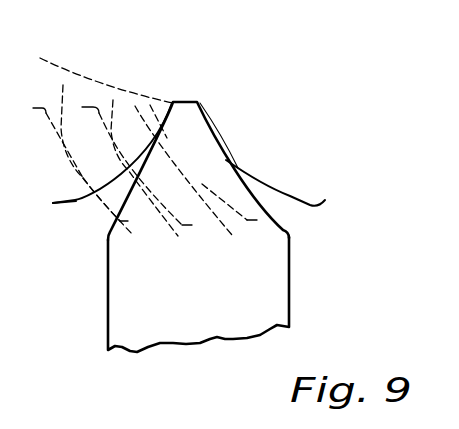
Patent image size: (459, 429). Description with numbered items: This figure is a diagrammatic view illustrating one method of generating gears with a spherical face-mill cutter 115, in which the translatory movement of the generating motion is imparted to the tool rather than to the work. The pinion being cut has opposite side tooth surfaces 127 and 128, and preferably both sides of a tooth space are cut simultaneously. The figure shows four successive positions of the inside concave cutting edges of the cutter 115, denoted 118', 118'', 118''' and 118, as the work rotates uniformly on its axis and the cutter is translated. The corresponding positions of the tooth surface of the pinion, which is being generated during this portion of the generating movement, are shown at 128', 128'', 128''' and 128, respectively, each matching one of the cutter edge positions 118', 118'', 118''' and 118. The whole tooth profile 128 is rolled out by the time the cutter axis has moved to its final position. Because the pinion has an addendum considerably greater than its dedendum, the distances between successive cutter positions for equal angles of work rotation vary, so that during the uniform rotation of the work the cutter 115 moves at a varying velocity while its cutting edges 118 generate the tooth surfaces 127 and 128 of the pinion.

The spherical face-mill cutter 115 is at (280, 275).
The inside concave cutting edges 118 is at (220, 171).
The inside concave cutting edges (first position) 118' is at (80, 147).
The inside concave cutting edges (second position) 118'' is at (135, 154).
The inside concave cutting edges (third position) 118''' is at (183, 151).
The tooth surface of the pinion 127 is at (76, 203).
The tooth surface of the pinion 128 is at (182, 132).
The tooth surface position (first) 128' is at (97, 138).
The tooth surface position (second) 128'' is at (144, 145).
The tooth surface position (third) 128''' is at (241, 169).